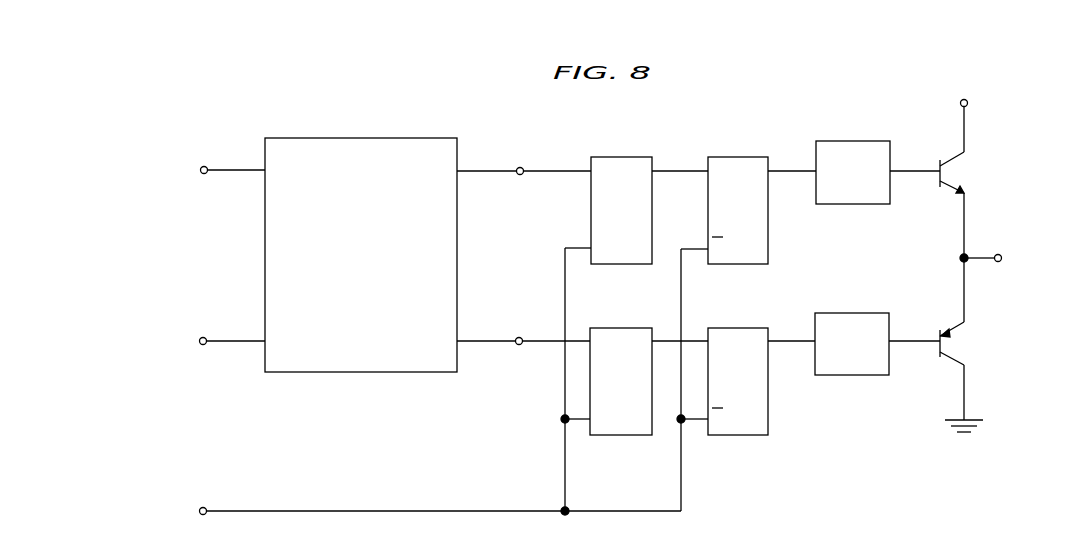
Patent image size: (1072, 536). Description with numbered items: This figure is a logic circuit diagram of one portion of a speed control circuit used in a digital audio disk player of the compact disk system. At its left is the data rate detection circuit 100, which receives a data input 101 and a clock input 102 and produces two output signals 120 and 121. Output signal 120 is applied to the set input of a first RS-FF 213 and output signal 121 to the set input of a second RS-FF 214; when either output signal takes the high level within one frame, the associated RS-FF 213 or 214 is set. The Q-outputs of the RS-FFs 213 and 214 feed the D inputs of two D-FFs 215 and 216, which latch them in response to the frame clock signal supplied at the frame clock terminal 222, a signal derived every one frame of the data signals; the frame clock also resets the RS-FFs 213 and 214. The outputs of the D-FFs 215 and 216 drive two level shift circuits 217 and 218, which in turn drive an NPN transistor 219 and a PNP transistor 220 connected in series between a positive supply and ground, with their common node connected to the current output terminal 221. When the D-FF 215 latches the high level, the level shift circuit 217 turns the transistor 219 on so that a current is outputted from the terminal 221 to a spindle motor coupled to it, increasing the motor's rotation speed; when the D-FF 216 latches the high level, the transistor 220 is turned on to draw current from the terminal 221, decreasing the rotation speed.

The data rate detection circuit 100 is at (438, 138).
The data input terminal 101 is at (206, 166).
The clock input terminal 102 is at (205, 337).
The output signal 120 is at (522, 167).
The output signal 121 is at (521, 337).
The RS-FF 213 is at (636, 157).
The RS-FF 214 is at (636, 328).
The D-FF 215 is at (752, 157).
The D-FF 216 is at (752, 328).
The level shift circuit 217 is at (876, 141).
The level shift circuit 218 is at (873, 313).
The NPN transistor 219 is at (948, 177).
The PNP transistor 220 is at (948, 347).
The current output terminal 221 is at (1000, 254).
The frame clock terminal 222 is at (205, 507).